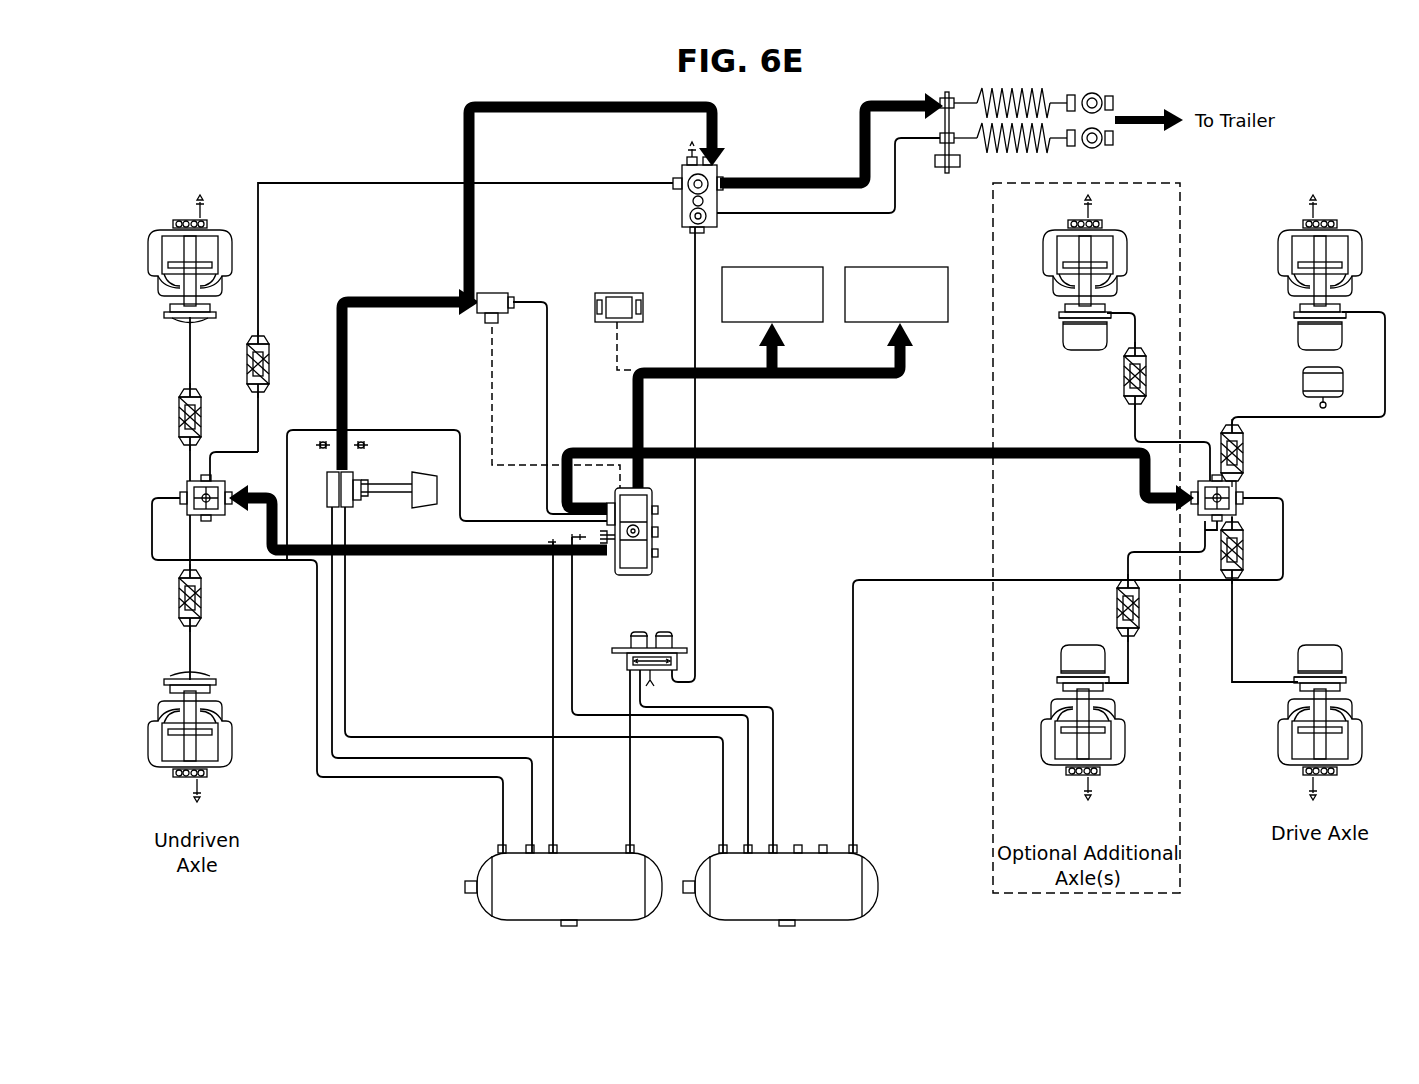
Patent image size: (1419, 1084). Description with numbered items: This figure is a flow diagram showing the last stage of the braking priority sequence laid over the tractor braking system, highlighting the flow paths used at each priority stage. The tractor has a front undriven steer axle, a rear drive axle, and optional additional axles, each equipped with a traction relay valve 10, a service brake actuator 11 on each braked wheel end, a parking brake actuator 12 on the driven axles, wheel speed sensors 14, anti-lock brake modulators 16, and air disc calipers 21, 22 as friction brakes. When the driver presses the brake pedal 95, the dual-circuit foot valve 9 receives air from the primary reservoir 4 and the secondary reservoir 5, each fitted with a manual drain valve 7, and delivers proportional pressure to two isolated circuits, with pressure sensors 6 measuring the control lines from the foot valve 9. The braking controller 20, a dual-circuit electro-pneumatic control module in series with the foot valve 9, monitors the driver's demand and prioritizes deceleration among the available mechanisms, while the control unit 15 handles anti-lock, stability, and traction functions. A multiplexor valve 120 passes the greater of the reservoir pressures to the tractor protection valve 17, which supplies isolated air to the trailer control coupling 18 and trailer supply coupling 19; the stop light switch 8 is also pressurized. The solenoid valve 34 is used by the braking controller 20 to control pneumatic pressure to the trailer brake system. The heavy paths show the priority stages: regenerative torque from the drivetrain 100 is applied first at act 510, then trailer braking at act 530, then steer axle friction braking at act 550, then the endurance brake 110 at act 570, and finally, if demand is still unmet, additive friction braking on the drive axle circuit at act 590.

The primary reservoir 4 is at (878, 862).
The secondary reservoir 5 is at (483, 862).
The pressure sensor 6 is at (323, 440).
The manual drain valve 7 is at (568, 927).
The stop light switch 8 is at (686, 156).
The dual-circuit foot valve 9 is at (368, 494).
The traction relay valve 10 is at (216, 520).
The service brake actuator 11 is at (182, 322).
The parking brake actuator 12 is at (1064, 345).
The wheel speed sensor 14 is at (205, 198).
The control unit 15 is at (602, 292).
The anti-lock brake modulator 16 is at (270, 365).
The tractor protection valve 17 is at (681, 207).
The trailer control coupling 18 is at (1112, 100).
The trailer supply coupling 19 is at (1112, 142).
The braking controller 20 is at (660, 489).
The air disc caliper 21 is at (165, 290).
The air disc caliper 22 is at (152, 716).
The valve 34 is at (495, 292).
The brake pedal 95 is at (415, 472).
The drivetrain controller 100 is at (800, 267).
The endurance brake controller 110 is at (907, 267).
The multiplexor valve 120 is at (620, 648).
The regenerative torque deceleration act 510 is at (724, 382).
The trailer braking deceleration act 530 is at (538, 107).
The steer axle friction braking act 550 is at (432, 560).
The endurance brake deceleration act 570 is at (888, 382).
The drive axle friction braking act 590 is at (822, 446).